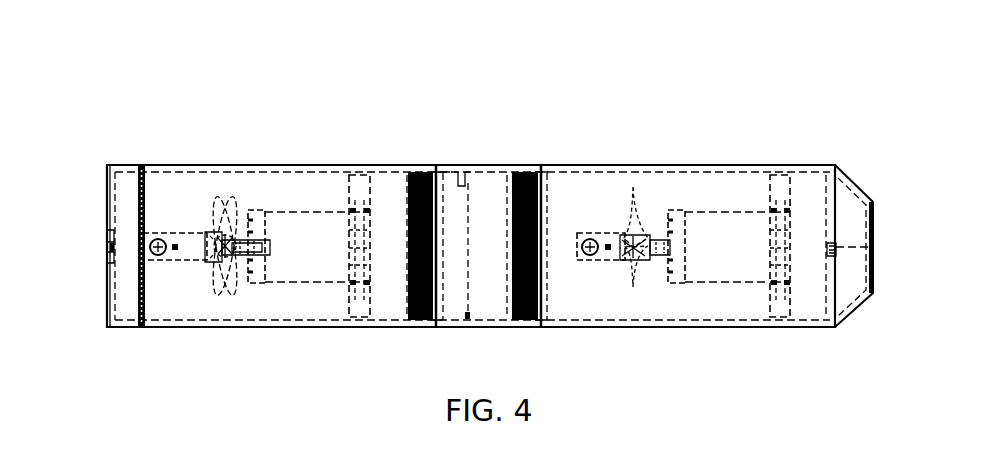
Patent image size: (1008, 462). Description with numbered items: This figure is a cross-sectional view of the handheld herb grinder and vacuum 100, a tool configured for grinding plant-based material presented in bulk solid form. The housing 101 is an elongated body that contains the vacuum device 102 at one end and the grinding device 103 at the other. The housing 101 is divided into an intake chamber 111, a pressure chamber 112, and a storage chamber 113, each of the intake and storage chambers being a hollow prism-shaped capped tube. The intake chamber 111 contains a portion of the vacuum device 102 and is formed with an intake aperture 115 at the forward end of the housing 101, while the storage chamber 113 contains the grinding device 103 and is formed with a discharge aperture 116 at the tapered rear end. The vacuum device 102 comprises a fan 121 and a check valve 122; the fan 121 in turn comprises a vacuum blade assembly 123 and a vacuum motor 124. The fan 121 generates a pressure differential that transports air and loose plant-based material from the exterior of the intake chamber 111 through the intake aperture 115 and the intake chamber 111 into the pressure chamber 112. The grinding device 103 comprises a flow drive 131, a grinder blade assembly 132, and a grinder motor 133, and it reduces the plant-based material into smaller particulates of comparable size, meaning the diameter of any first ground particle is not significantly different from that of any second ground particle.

The handheld herb grinder and vacuum 100 is at (85, 108).
The housing 101 is at (743, 163).
The vacuum device 102 is at (287, 282).
The grinding device 103 is at (758, 370).
The intake chamber 111 is at (168, 165).
The pressure chamber 112 is at (451, 165).
The storage chamber 113 is at (600, 171).
The intake aperture 115 is at (110, 247).
The discharge aperture 116 is at (875, 233).
The fan 121 is at (260, 72).
The check valve 122 is at (365, 232).
The vacuum blade assembly 123 is at (226, 187).
The vacuum motor 124 is at (288, 224).
The flow drive 131 is at (632, 285).
The grinder blade assembly 132 is at (784, 287).
The grinder motor 133 is at (713, 262).